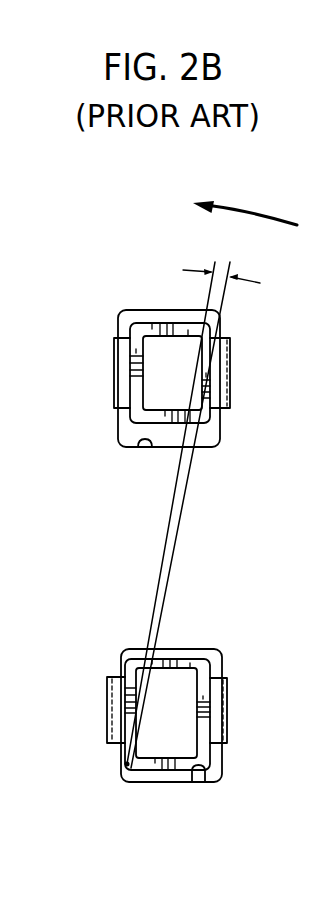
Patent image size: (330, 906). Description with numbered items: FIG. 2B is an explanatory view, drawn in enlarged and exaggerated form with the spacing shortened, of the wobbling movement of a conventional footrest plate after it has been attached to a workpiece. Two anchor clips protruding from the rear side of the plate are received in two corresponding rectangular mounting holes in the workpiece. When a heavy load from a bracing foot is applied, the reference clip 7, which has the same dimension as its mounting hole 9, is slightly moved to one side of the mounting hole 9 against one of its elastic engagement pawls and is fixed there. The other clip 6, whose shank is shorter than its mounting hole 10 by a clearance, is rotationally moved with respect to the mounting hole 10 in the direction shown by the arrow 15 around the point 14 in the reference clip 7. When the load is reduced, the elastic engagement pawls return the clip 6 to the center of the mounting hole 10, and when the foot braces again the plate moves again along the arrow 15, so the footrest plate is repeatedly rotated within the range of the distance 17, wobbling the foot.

The clip 6 is at (143, 327).
The reference clip 7 is at (196, 658).
The mounting hole 9 is at (200, 782).
The mounting hole 10 is at (143, 447).
The point 14 is at (127, 764).
The arrow 15 is at (250, 208).
The distance 17 is at (223, 266).